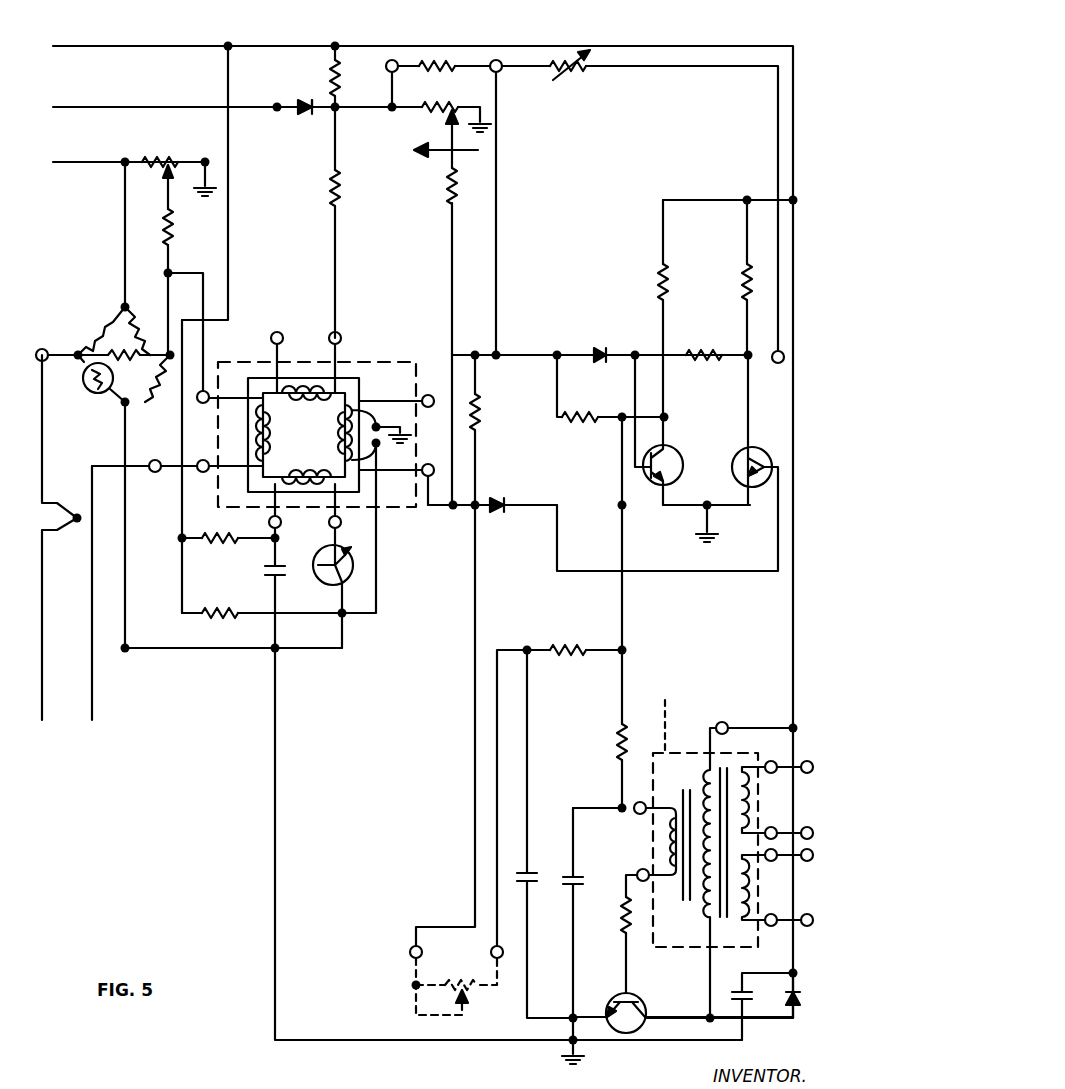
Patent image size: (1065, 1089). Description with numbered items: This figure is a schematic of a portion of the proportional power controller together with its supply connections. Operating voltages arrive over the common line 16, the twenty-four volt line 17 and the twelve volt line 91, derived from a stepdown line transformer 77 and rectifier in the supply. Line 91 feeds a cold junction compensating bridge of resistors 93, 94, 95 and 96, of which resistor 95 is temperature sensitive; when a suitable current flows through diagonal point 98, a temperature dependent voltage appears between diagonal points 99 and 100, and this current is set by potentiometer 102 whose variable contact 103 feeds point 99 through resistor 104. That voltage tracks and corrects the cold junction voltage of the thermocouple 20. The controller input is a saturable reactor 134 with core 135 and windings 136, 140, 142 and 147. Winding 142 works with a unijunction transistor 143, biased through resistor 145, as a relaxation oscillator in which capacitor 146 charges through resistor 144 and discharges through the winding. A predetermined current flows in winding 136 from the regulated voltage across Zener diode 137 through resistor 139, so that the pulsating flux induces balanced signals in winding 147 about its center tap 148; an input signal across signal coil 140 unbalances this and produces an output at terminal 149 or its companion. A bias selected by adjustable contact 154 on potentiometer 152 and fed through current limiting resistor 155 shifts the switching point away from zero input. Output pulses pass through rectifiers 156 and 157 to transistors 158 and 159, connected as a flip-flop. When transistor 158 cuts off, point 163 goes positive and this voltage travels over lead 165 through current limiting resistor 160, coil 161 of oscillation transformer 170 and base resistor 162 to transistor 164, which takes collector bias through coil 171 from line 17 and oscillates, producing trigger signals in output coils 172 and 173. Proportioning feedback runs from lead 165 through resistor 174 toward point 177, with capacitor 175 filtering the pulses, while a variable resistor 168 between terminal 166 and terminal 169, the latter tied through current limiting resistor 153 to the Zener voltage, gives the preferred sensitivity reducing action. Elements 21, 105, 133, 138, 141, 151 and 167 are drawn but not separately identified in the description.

The common line 16 is at (72, 107).
The line 17 is at (72, 46).
The thermocouple 20 is at (77, 522).
The lead 21 is at (42, 638).
The stepdown line transformer 77 is at (127, 302).
The line 91 is at (70, 162).
The resistor 93 is at (90, 338).
The resistor 94 is at (148, 316).
The temperature sensitive resistor 95 is at (88, 395).
The resistor 96 is at (144, 392).
The diagonal point 98 is at (125, 402).
The diagonal point 99 is at (168, 364).
The diagonal point 100 is at (78, 358).
The potentiometer 102 is at (154, 159).
The variable contact 103 is at (164, 182).
The resistor 104 is at (180, 228).
The lead 105 is at (94, 692).
The bridge terminal 133 is at (122, 351).
The saturable reactor 134 is at (396, 354).
The core 135 is at (359, 384).
The winding 136 is at (292, 348).
The Zener diode 137 is at (308, 113).
The resistor 138 is at (312, 76).
The resistor 139 is at (328, 180).
The signal coil 140 is at (271, 422).
The conductor 141 is at (205, 272).
The winding 142 is at (303, 500).
The unijunction transistor 143 is at (315, 576).
The resistor 144 is at (227, 549).
The resistor 145 is at (218, 611).
The capacitor 146 is at (270, 580).
The winding 147 is at (337, 426).
The center tap 148 is at (382, 424).
The terminal 149 is at (426, 396).
The resistor 151 is at (482, 412).
The potentiometer 152 is at (452, 106).
The current limiting resistor 153 is at (433, 76).
The adjustable contact 154 is at (442, 126).
The current limiting resistor 155 is at (438, 182).
The rectifier 156 is at (595, 350).
The rectifier 157 is at (496, 498).
The transistor 158 is at (676, 452).
The transistor 159 is at (736, 454).
The current limiting resistor 160 is at (614, 734).
The coil 161 is at (652, 843).
The base resistor 162 is at (624, 927).
The point 163 is at (666, 416).
The transistor 164 is at (632, 997).
The lead 165 is at (623, 637).
The terminal 166 is at (776, 364).
The conductor 167 is at (670, 72).
The variable resistor 168 is at (576, 70).
The terminal 169 is at (502, 72).
The oscillation transformer 170 is at (458, 981).
The coil 171 is at (704, 765).
The output coil 172 is at (744, 766).
The output coil 173 is at (742, 926).
The resistor 174 is at (564, 648).
The capacitor 175 is at (542, 883).
The point 177 is at (478, 512).